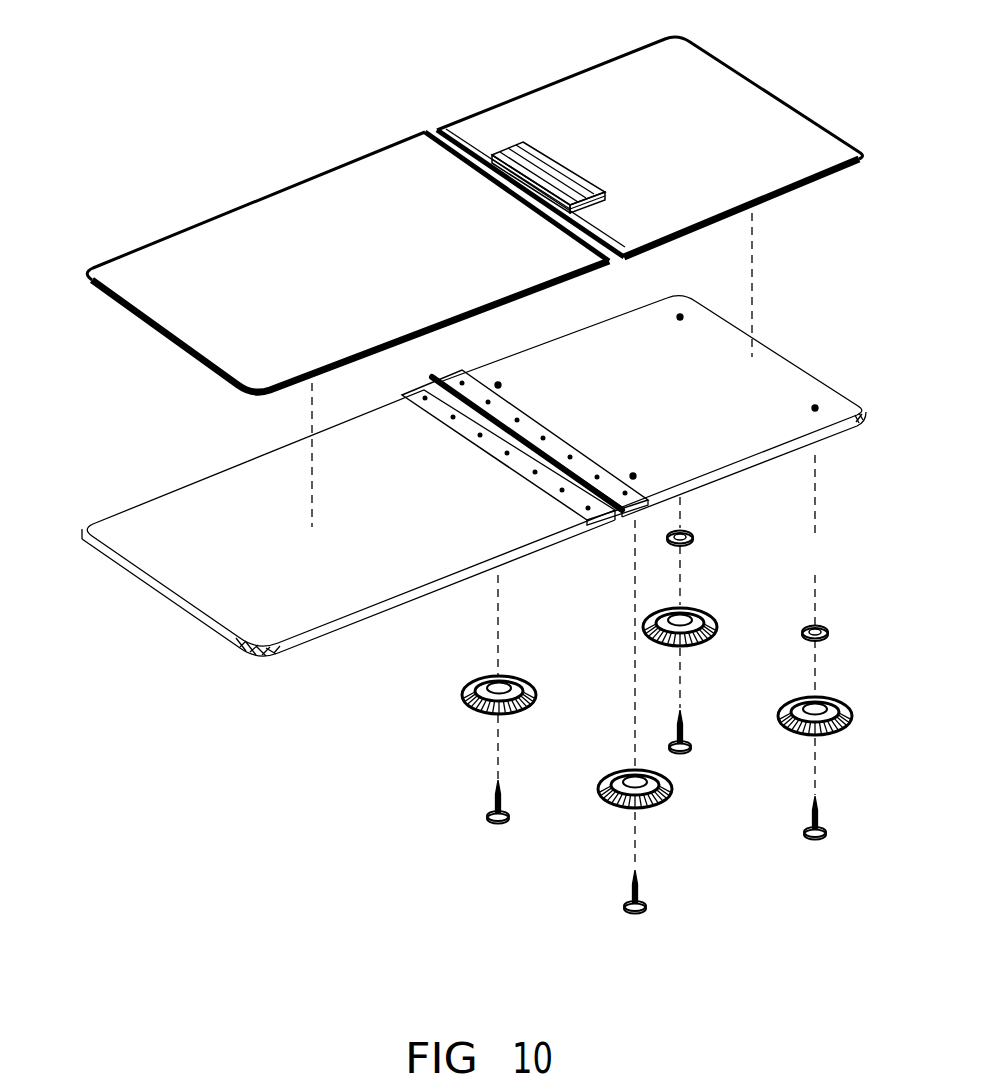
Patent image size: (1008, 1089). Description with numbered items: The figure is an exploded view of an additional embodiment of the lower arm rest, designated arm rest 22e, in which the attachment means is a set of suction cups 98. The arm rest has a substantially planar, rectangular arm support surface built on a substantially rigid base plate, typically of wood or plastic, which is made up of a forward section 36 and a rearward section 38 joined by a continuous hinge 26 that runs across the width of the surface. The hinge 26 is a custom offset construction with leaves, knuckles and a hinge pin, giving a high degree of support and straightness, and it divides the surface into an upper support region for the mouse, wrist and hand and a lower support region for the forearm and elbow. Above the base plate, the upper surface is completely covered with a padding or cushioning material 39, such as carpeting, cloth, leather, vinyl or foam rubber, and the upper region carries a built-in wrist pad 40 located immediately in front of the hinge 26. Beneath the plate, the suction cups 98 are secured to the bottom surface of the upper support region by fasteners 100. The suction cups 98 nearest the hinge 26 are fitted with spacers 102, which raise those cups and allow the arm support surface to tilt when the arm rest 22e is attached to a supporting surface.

The arm rest 22e is at (139, 433).
The padding or cushioning material 39 is at (515, 118).
The built-in wrist pad 40 is at (553, 160).
The continuous hinge 26 is at (562, 455).
The forward section 36 is at (760, 428).
The rearward section 38 is at (287, 602).
The suction cups 98 is at (460, 688).
The fasteners 100 is at (490, 815).
The spacers 102 is at (693, 535).